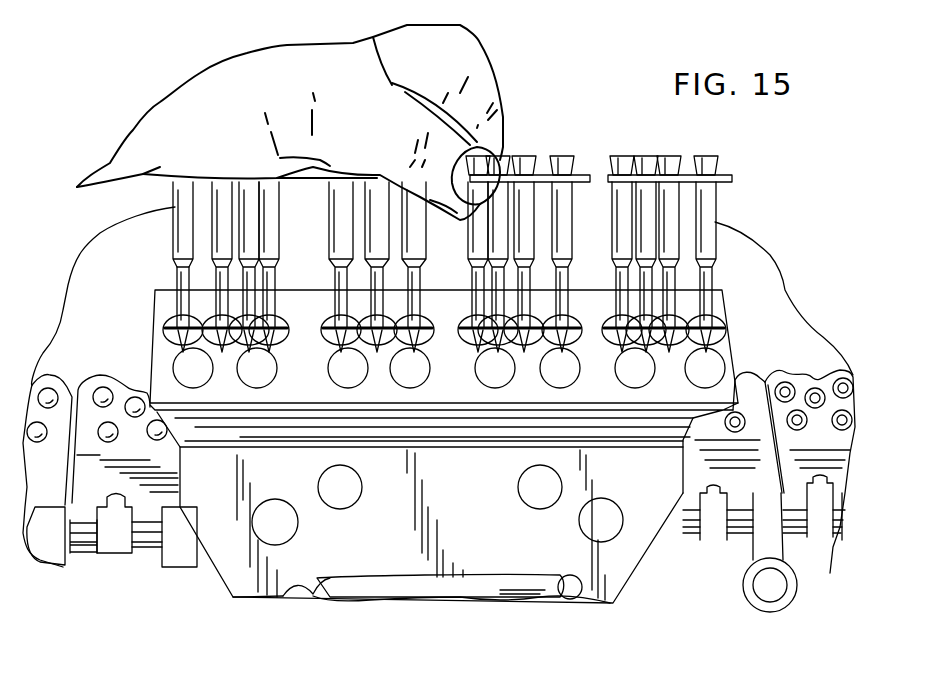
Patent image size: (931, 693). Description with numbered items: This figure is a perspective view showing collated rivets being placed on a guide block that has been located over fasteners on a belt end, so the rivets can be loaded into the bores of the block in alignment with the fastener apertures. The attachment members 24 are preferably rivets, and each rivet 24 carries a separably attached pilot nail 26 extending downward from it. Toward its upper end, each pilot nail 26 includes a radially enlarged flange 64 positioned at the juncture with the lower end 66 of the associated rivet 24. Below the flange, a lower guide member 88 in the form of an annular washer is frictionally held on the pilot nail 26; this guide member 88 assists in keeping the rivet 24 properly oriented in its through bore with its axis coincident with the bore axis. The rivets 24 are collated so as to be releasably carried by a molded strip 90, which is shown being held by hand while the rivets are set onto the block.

The attachment members 24 is at (579, 228).
The pilot nails 26 is at (180, 300).
The radially enlarged flange 64 is at (180, 268).
The lower ends 66 is at (180, 260).
The lower guide member 88 is at (720, 328).
The molded strip 90 is at (571, 142).